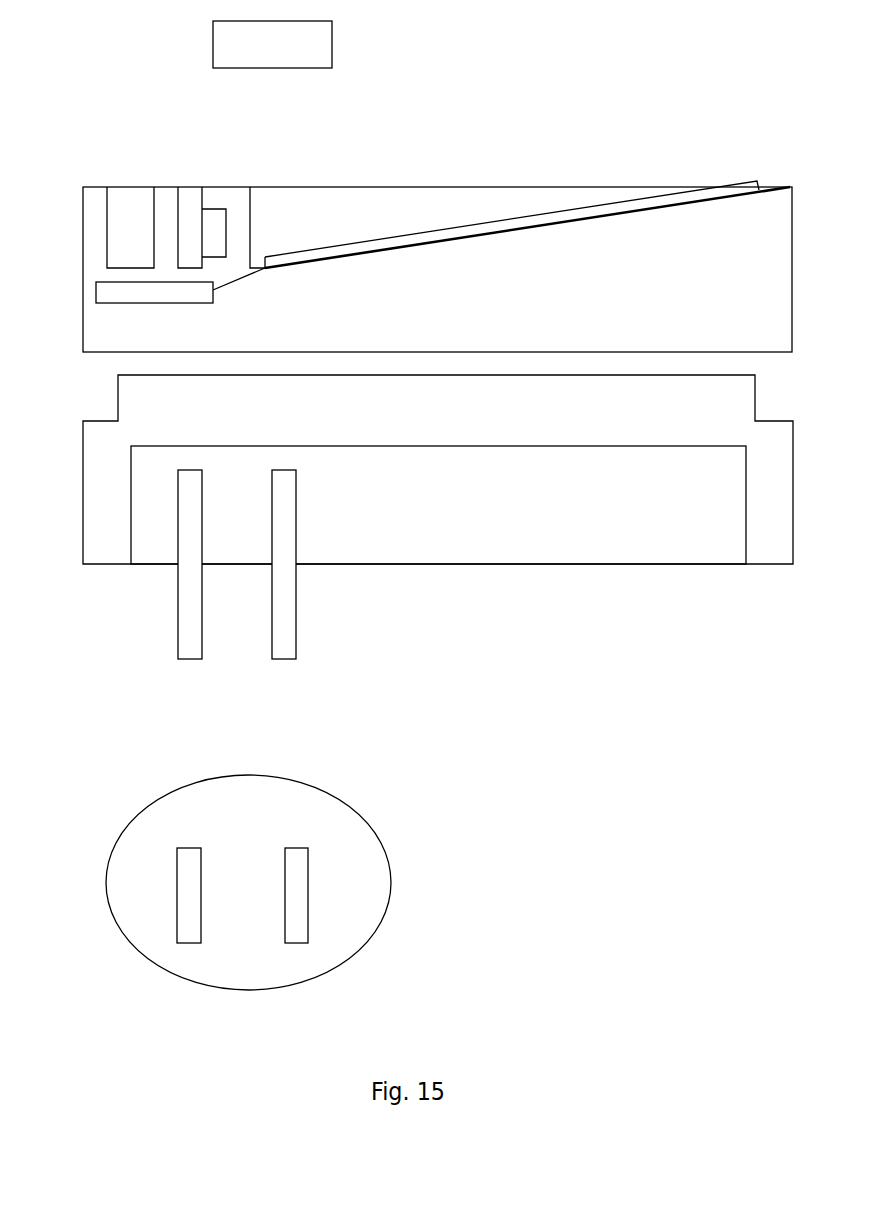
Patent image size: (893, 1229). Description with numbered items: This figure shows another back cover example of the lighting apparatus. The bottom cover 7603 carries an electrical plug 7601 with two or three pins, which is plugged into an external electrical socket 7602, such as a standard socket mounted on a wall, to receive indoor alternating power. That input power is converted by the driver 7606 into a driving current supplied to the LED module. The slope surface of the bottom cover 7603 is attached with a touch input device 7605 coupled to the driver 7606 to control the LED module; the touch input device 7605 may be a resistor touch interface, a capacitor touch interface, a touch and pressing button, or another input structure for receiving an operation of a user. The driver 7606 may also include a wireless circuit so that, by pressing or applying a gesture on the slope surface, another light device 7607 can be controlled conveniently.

The electrical plug 7601 is at (185, 627).
The external electrical socket 7602 is at (192, 880).
The bottom cover 7603 is at (88, 459).
The touch input device 7605 is at (665, 205).
The driver 7606 is at (190, 303).
The another light device 7607 is at (318, 53).